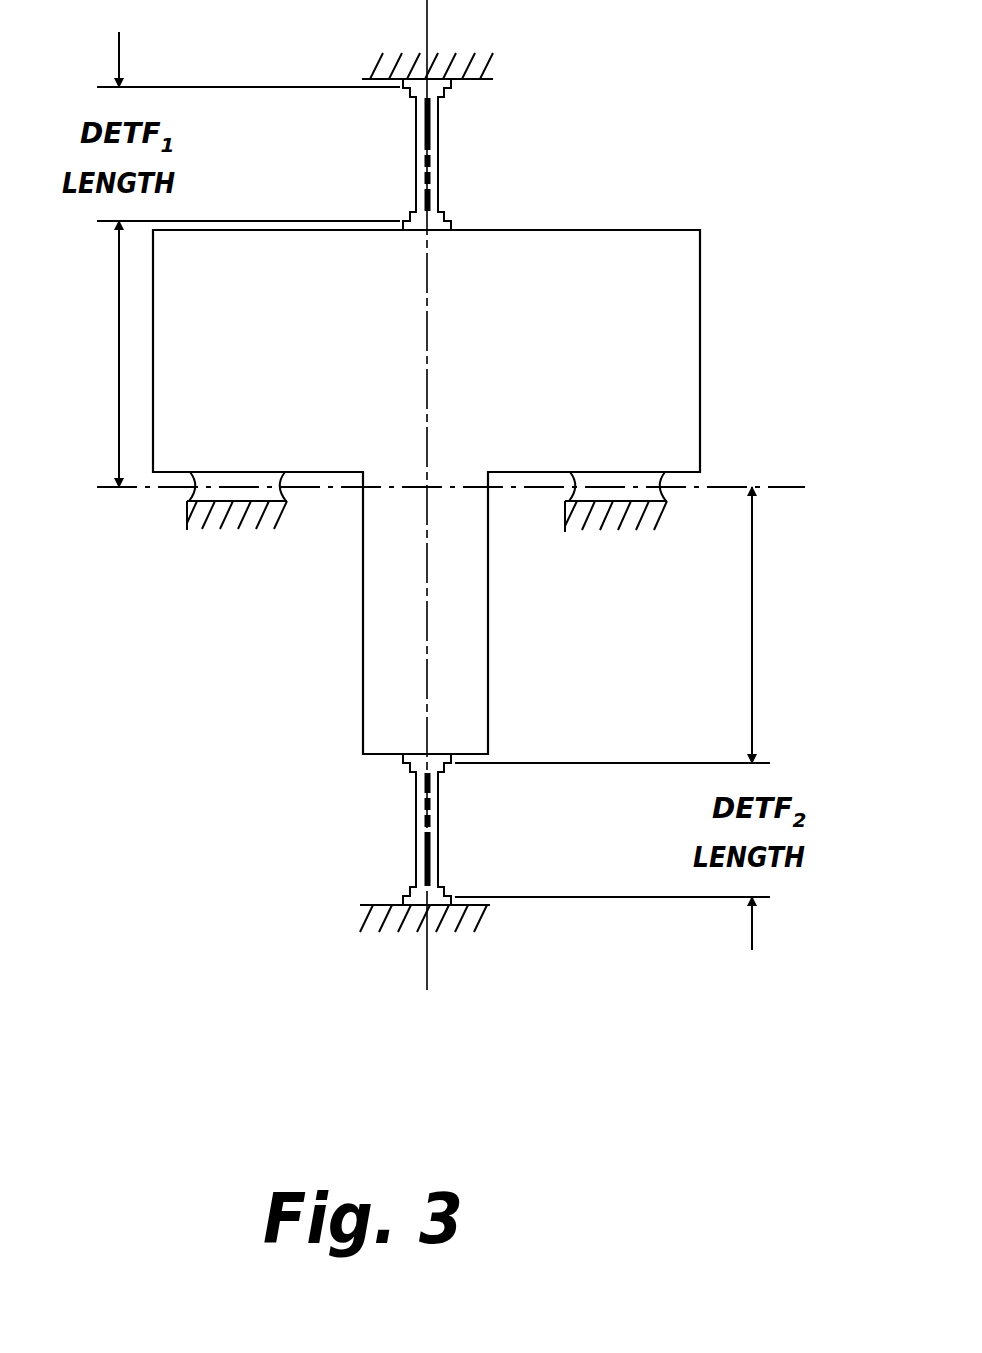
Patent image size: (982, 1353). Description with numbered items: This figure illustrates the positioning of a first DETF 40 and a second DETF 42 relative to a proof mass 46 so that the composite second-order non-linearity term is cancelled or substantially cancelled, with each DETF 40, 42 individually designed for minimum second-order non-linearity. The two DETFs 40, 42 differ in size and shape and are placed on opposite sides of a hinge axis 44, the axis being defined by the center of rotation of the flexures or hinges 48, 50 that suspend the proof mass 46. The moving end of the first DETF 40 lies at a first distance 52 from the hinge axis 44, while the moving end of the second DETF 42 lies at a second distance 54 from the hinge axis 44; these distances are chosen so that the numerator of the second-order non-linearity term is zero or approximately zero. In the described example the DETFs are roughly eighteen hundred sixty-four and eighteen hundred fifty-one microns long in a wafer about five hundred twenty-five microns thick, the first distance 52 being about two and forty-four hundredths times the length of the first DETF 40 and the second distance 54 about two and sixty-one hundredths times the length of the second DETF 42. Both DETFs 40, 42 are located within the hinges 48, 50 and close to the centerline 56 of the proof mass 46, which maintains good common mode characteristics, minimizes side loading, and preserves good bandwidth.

The first DETF 40 is at (439, 167).
The second DETF 42 is at (437, 817).
The hinge axis 44 is at (782, 487).
The proof mass 46 is at (675, 331).
The hinge 48 is at (187, 497).
The hinge 50 is at (665, 497).
The first distance 52 is at (118, 328).
The second distance 54 is at (752, 615).
The centerline 56 is at (427, 960).